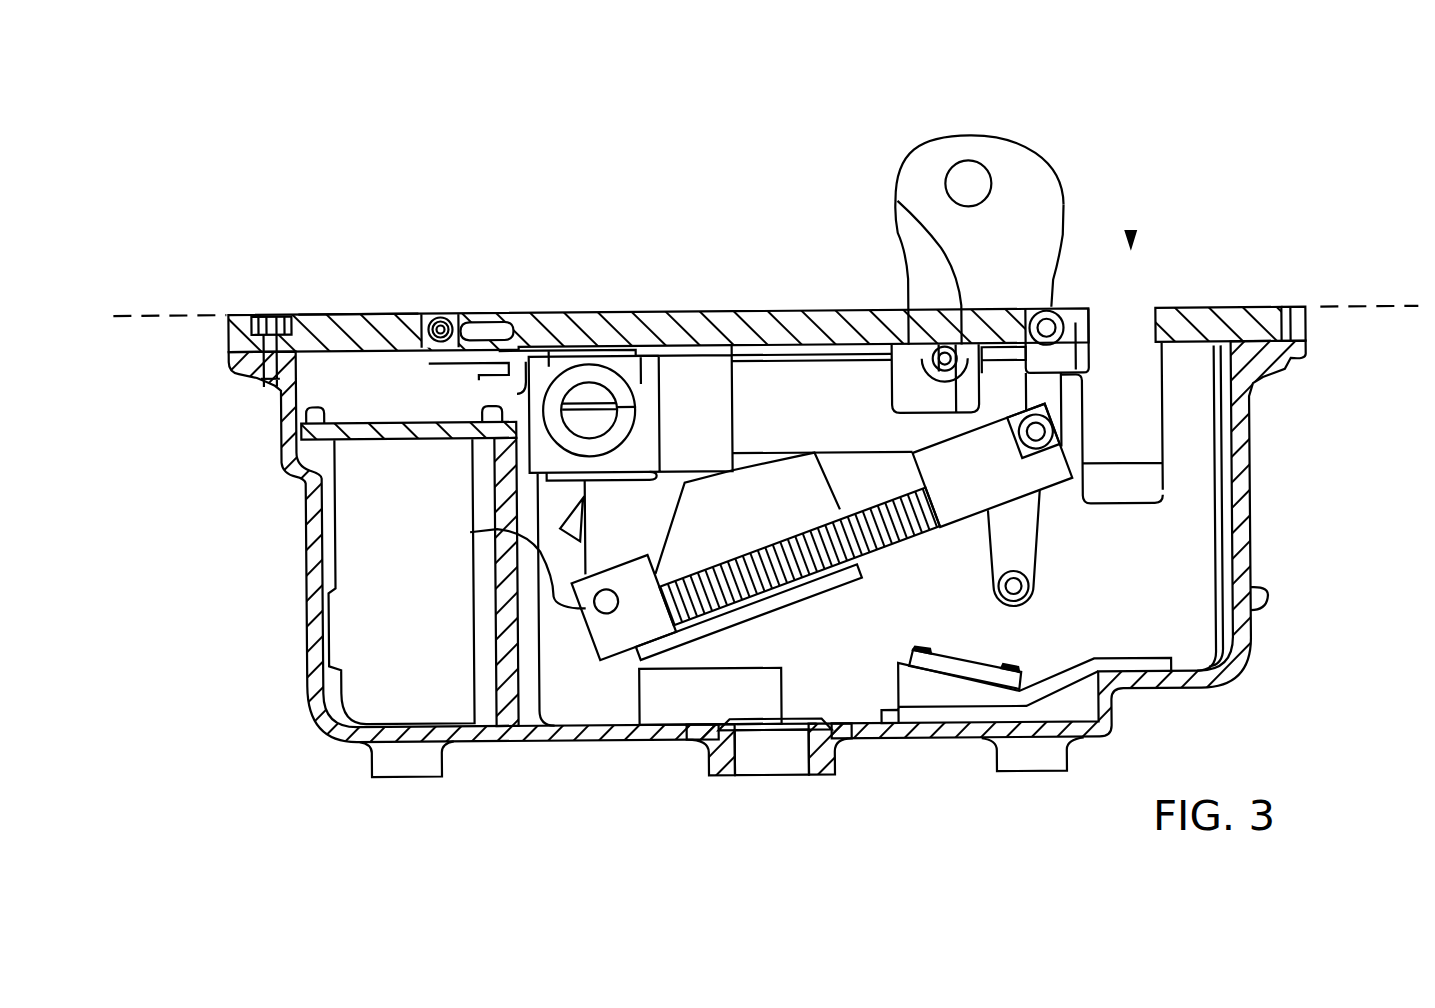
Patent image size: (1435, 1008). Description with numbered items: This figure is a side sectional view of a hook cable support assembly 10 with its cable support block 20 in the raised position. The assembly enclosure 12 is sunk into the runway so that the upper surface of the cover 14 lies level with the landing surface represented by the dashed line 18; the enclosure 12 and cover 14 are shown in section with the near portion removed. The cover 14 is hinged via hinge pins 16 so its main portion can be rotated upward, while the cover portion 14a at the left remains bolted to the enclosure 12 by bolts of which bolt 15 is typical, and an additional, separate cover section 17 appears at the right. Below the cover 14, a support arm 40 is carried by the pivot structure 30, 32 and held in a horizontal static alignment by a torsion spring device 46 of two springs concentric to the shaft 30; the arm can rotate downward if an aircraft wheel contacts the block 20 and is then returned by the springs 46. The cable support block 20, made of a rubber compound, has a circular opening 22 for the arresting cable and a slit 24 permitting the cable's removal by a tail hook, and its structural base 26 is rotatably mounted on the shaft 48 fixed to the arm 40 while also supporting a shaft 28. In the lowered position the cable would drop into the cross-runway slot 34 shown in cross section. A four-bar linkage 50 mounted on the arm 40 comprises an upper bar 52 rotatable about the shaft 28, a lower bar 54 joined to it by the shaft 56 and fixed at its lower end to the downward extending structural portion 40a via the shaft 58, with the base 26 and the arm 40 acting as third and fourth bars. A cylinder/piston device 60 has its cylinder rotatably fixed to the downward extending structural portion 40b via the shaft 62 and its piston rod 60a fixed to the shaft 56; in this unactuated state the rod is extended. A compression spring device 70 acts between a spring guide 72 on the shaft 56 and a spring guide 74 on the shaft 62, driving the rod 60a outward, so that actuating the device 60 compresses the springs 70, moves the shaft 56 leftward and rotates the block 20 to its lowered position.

The hook cable support assembly 10 is at (1375, 492).
The assembly enclosure 12 is at (1250, 634).
The cover 14 is at (705, 310).
The cover portion 14a is at (343, 315).
The bolt 15 is at (273, 315).
The hinge pins 16 is at (443, 315).
The cover section 17 is at (1255, 307).
The landing surface 18 is at (138, 316).
The cable support block 20 is at (915, 143).
The circular opening 22 is at (993, 173).
The slit 24 is at (945, 135).
The structural base 26 is at (897, 200).
The shaft 28 is at (1053, 307).
The shaft 30 is at (606, 382).
The pivot structure 32 is at (518, 392).
The cross-runway slot 34 is at (1133, 236).
The support arm 40 is at (732, 310).
The downward extending structural portion 40a is at (925, 656).
The downward extending structural portion 40b is at (666, 540).
The torsion spring device 46 is at (430, 363).
The shaft 48 is at (947, 346).
The four-bar linkage 50 is at (1127, 547).
The upper bar 52 is at (1105, 375).
The lower bar 54 is at (1042, 548).
The shaft 56 is at (1062, 415).
The shaft 58 is at (1012, 604).
The cylinder/piston device 60 is at (727, 625).
The piston rod 60a is at (870, 480).
The shaft 62 is at (594, 603).
The compression spring device 70 is at (885, 548).
The spring guide 72 is at (968, 518).
The spring guide 74 is at (472, 530).